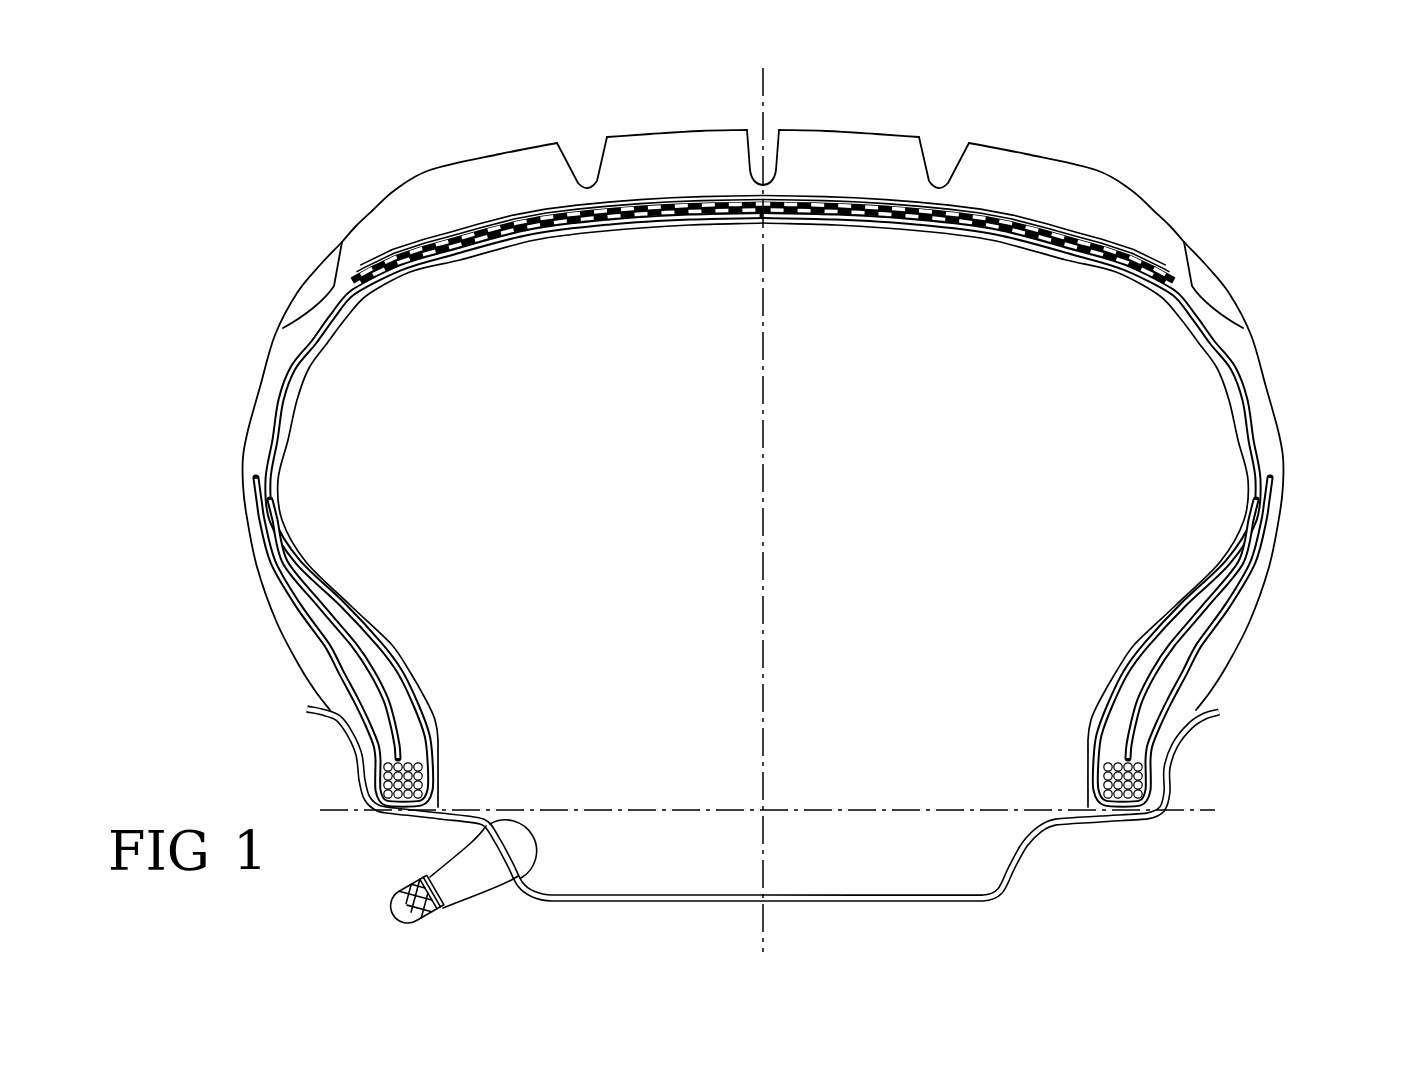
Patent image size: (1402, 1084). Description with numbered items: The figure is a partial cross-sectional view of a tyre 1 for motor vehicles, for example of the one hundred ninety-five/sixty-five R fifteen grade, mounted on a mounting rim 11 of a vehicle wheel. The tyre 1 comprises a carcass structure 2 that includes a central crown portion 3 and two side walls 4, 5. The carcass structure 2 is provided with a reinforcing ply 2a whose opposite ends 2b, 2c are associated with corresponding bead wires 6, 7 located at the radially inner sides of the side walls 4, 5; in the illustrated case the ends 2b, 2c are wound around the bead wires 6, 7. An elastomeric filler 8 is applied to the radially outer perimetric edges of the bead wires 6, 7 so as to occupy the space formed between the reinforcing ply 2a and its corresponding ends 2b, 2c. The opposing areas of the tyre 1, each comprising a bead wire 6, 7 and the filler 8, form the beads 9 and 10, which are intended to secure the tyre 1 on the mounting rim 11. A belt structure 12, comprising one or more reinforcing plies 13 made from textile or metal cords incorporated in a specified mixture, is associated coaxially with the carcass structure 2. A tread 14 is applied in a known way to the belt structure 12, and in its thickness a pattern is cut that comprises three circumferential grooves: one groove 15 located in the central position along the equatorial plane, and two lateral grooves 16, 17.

The tyre 1 is at (772, 446).
The carcass structure 2 is at (784, 510).
The reinforcing ply 2a is at (290, 562).
The end of reinforcing ply 2b is at (320, 647).
The end of reinforcing ply 2c is at (1262, 532).
The central crown portion 3 is at (658, 230).
The side wall 4 is at (243, 468).
The side wall 5 is at (1283, 455).
The bead wire 6 is at (408, 760).
The bead wire 7 is at (1143, 763).
The elastomeric filler 8 is at (372, 673).
The bead 9 is at (470, 778).
The bead 10 is at (1046, 774).
The mounting rim 11 is at (993, 858).
The belt structure 12 is at (1068, 210).
The reinforcing ply of belt structure 13 is at (893, 207).
The tread 14 is at (763, 206).
The central circumferential groove 15 is at (767, 104).
The lateral circumferential groove 16 is at (583, 145).
The lateral circumferential groove 17 is at (943, 150).